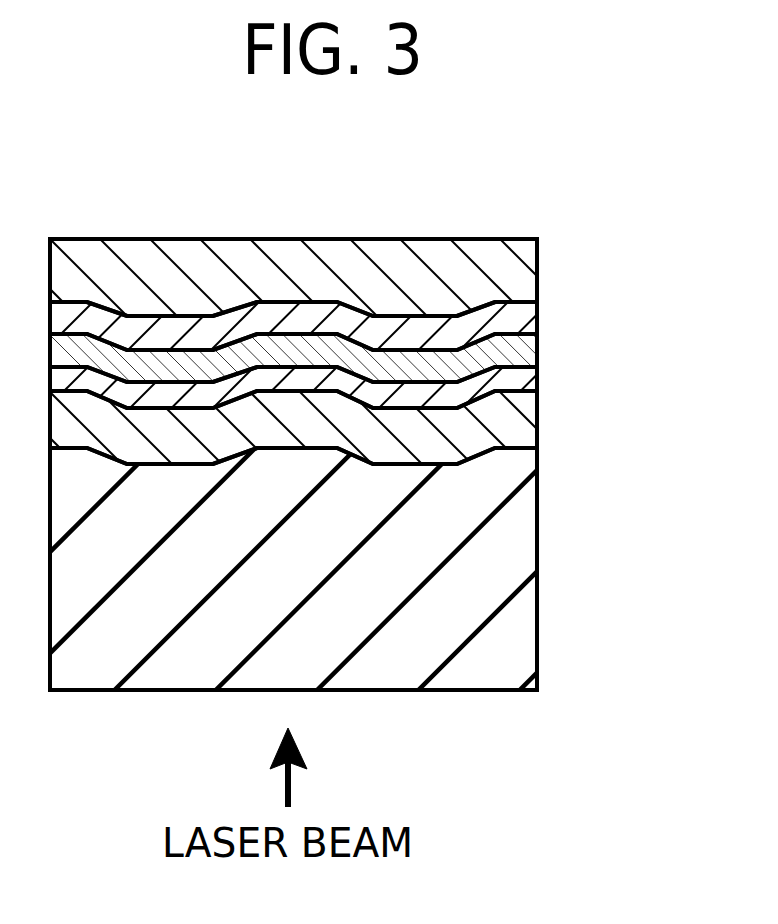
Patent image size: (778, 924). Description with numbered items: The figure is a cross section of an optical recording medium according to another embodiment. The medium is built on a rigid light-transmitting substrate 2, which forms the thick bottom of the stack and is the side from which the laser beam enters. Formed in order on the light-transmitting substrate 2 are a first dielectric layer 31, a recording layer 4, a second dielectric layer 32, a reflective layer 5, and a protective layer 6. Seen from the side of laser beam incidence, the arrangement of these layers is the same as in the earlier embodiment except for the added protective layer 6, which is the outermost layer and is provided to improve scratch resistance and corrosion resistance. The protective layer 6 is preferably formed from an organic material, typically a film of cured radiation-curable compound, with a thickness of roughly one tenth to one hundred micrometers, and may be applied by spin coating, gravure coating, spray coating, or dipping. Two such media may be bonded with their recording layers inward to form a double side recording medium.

The protective layer 6 is at (530, 273).
The reflective layer 5 is at (530, 322).
The second dielectric layer 32 is at (530, 346).
The recording layer 4 is at (530, 380).
The first dielectric layer 31 is at (530, 425).
The light-transmitting substrate 2 is at (530, 562).